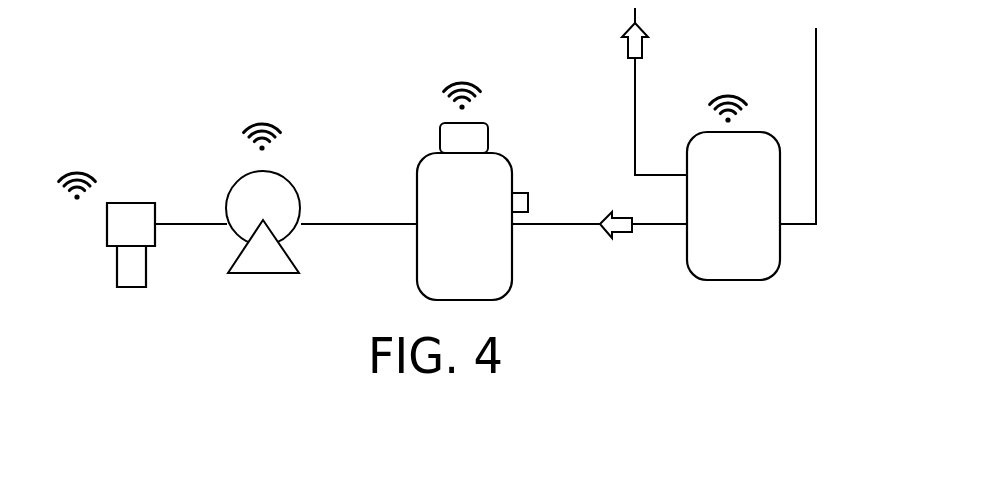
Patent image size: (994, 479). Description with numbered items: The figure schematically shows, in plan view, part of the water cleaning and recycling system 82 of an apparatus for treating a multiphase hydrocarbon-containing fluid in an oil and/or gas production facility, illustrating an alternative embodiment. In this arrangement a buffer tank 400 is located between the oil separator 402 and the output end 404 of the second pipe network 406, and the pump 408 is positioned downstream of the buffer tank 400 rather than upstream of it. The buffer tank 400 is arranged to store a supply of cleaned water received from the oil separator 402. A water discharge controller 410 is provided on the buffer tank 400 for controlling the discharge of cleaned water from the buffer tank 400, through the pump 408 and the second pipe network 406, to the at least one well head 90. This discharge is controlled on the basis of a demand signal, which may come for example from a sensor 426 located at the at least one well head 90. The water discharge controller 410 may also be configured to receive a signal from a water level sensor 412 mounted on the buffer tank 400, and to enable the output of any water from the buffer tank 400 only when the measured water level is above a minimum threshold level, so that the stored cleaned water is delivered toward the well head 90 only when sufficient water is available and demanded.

The water cleaning and recycling system 82 is at (572, 110).
The well head 90 is at (131, 202).
The buffer tank 400 is at (510, 154).
The oil separator 402 is at (690, 134).
The output end 404 is at (188, 218).
The second pipe network 406 is at (353, 221).
The pump 408 is at (278, 176).
The water discharge controller 410 is at (440, 125).
The water level sensor 412 is at (532, 202).
The sensor 426 is at (77, 204).